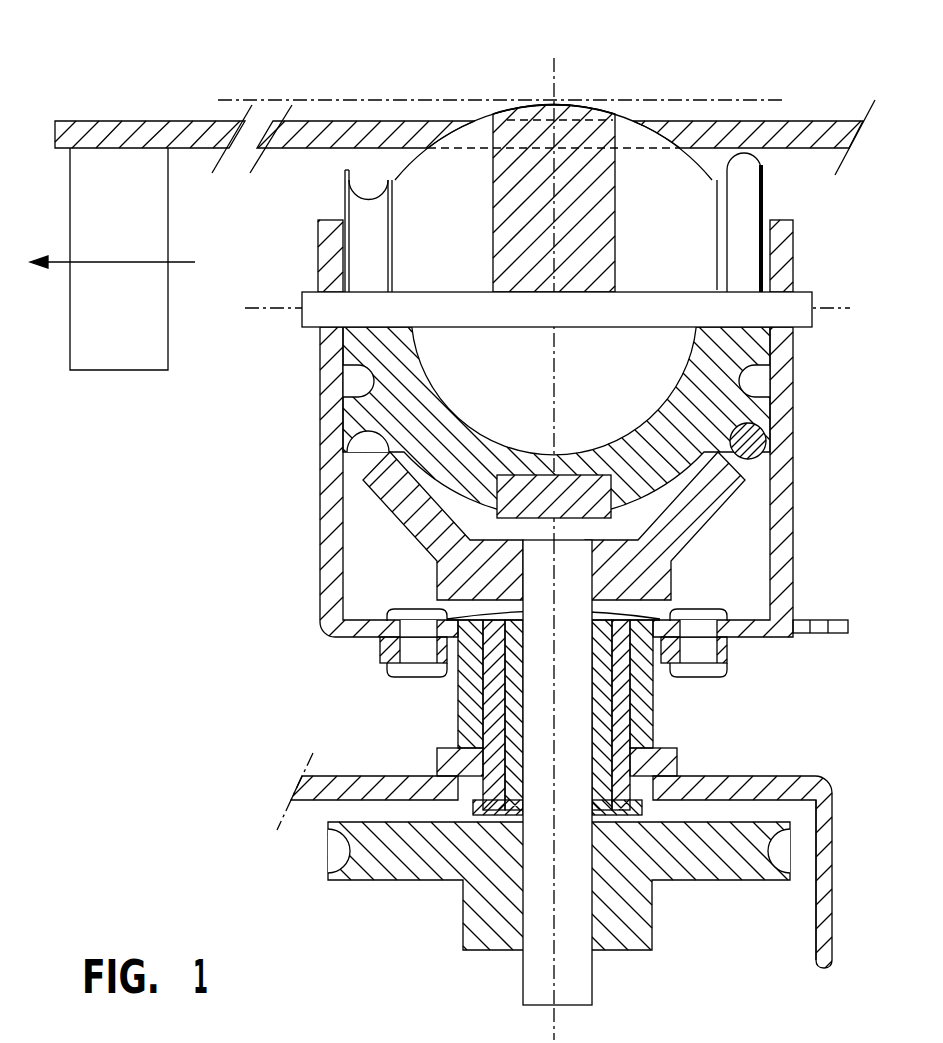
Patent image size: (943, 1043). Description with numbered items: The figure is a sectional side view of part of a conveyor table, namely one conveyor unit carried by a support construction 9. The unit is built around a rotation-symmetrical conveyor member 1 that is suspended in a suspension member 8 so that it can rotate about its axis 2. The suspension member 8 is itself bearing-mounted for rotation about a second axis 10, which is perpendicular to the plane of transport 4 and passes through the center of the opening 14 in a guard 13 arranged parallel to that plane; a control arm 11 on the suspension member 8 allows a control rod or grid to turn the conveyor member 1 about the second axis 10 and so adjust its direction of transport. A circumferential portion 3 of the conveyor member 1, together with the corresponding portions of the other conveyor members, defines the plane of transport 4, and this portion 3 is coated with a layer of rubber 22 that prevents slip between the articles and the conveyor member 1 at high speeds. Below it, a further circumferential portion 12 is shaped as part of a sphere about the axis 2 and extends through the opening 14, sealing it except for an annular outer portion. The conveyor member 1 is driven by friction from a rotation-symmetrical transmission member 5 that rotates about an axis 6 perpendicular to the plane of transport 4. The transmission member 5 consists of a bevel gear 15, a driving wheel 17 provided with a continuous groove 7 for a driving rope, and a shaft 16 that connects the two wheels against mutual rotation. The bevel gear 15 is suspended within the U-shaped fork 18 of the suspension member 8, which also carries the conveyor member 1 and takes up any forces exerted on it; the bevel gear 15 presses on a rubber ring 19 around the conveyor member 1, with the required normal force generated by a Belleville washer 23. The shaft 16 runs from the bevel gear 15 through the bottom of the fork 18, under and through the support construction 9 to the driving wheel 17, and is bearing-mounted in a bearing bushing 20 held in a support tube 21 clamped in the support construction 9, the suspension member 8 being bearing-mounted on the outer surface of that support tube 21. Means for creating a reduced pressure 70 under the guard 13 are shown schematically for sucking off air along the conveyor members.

The conveyor member 1 is at (437, 262).
The axis 2 is at (318, 307).
The circumferential portion 3 is at (505, 105).
The plane of transport 4 is at (375, 100).
The transmission member 5 is at (681, 583).
The axis 6 is at (557, 739).
The continuous groove 7 is at (778, 872).
The suspension member 8 is at (797, 583).
The support construction 9 is at (820, 790).
The second axis 10 is at (557, 60).
The control arm 11 is at (840, 636).
The circumferential portion 12 is at (630, 122).
The guard 13 is at (760, 122).
The opening 14 is at (427, 127).
The bevel gear 15 is at (690, 540).
The shaft 16 is at (573, 703).
The driving wheel 17 is at (742, 820).
The U-shaped fork 18 is at (795, 398).
The rubber ring 19 is at (762, 158).
The bearing bushing 20 is at (517, 697).
The support tube 21 is at (492, 730).
The layer of rubber 22 is at (605, 108).
The Belleville washer 23 is at (445, 614).
The means for creating a reduced pressure 70 is at (135, 372).